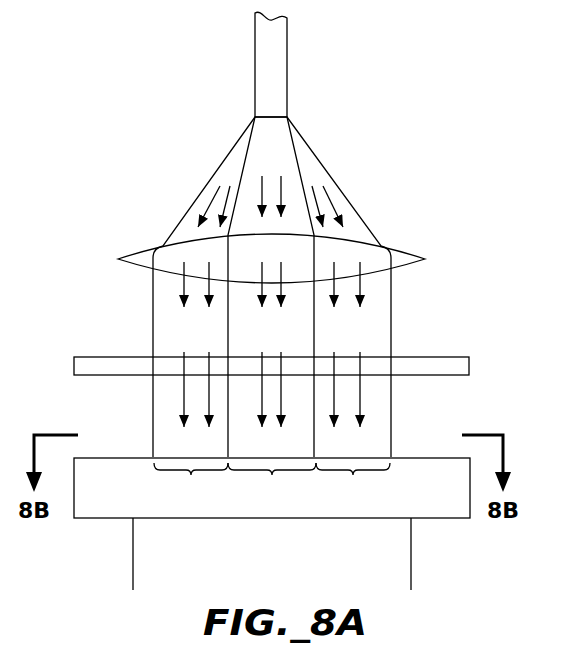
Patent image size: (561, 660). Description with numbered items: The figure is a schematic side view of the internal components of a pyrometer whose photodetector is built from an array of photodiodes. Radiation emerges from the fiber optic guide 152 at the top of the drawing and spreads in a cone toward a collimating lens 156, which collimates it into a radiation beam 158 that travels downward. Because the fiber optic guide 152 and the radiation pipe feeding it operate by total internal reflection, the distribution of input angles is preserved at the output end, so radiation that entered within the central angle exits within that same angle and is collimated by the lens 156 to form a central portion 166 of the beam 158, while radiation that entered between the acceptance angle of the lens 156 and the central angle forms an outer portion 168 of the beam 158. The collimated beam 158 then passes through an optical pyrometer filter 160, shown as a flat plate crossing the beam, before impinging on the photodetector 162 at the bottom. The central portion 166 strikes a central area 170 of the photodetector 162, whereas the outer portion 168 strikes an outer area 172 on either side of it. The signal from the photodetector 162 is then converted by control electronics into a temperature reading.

The fiber optic guide 152 is at (274, 47).
The collimating lens 156 is at (400, 253).
The radiation beam 158 is at (391, 297).
The optical pyrometer filter 160 is at (75, 367).
The photodetector 162 is at (427, 518).
The central portion of beam 166 is at (286, 344).
The outer portion of beam 168 is at (208, 344).
The central area of photodetector 170 is at (272, 483).
The outer area of photodetector 172 is at (272, 483).